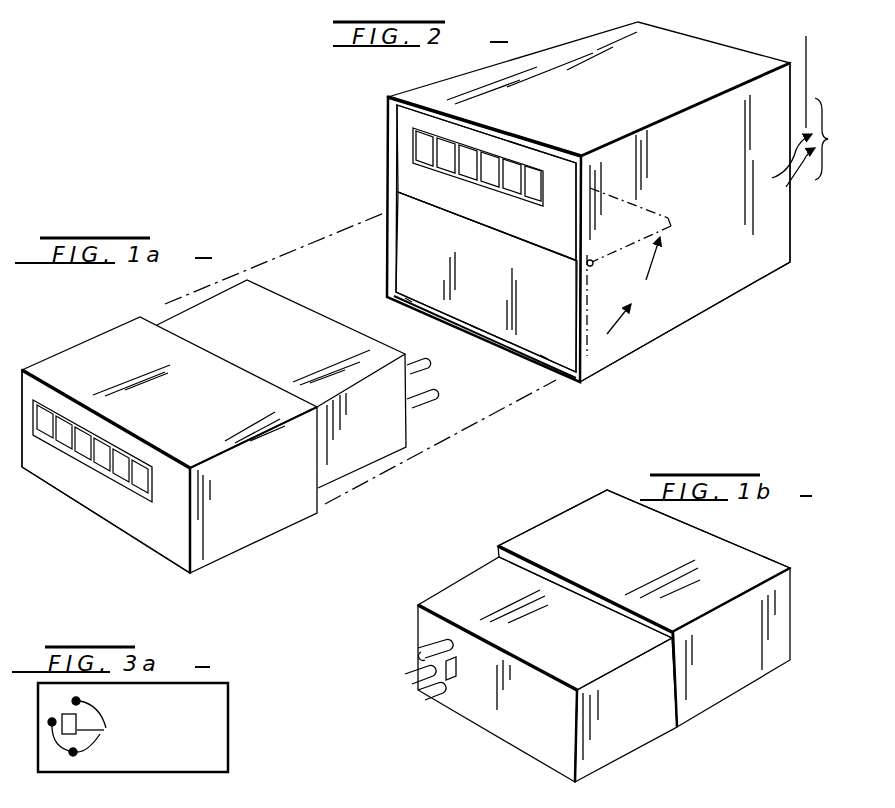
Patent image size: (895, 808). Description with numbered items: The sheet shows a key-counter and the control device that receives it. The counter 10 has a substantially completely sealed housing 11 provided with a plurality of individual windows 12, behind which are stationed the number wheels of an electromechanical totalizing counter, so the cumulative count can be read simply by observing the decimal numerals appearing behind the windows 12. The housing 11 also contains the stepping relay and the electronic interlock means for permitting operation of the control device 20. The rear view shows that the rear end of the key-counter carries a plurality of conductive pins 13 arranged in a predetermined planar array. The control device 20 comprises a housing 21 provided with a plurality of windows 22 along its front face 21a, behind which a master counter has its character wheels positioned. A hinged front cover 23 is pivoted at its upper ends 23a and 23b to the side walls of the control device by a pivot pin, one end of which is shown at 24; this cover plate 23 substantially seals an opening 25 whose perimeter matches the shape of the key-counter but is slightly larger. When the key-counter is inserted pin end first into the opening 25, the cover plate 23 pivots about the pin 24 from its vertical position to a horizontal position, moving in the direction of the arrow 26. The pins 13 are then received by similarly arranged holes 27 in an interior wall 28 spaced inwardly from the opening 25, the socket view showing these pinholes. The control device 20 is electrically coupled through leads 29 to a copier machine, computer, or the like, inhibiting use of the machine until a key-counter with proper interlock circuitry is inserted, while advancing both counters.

In FIG. 1A, the counter 10 is at (75, 323).
In FIG. 1B, the counter 10 is at (786, 719).
In FIG. 1A, the housing 11 is at (240, 535).
In FIG. 1B, the housing 11 is at (560, 518).
In FIG. 1A, the windows 12 is at (60, 440).
In FIG. 1A, the conductive pins 13 is at (423, 383).
In FIG. 1B, the conductive pins 13 is at (422, 646).
In FIG. 2, the control device 20 is at (780, 323).
In FIG. 2, the housing 21 is at (727, 172).
In FIG. 2, the front face 21a is at (566, 239).
In FIG. 2, the windows 22 is at (488, 180).
In FIG. 2, the hinged front cover 23 is at (494, 295).
In FIG. 2, the upper end 23a is at (576, 262).
In FIG. 2, the upper end 23b is at (401, 195).
In FIG. 2, the pivot pin 24 is at (591, 266).
In FIG. 2, the opening 25 is at (385, 252).
In FIG. 2, the arrow 26 is at (645, 285).
In FIG. 3A, the holes 27 is at (89, 729).
In FIG. 3A, the interior wall 28 is at (196, 748).
In FIG. 2, the leads 29 is at (766, 109).